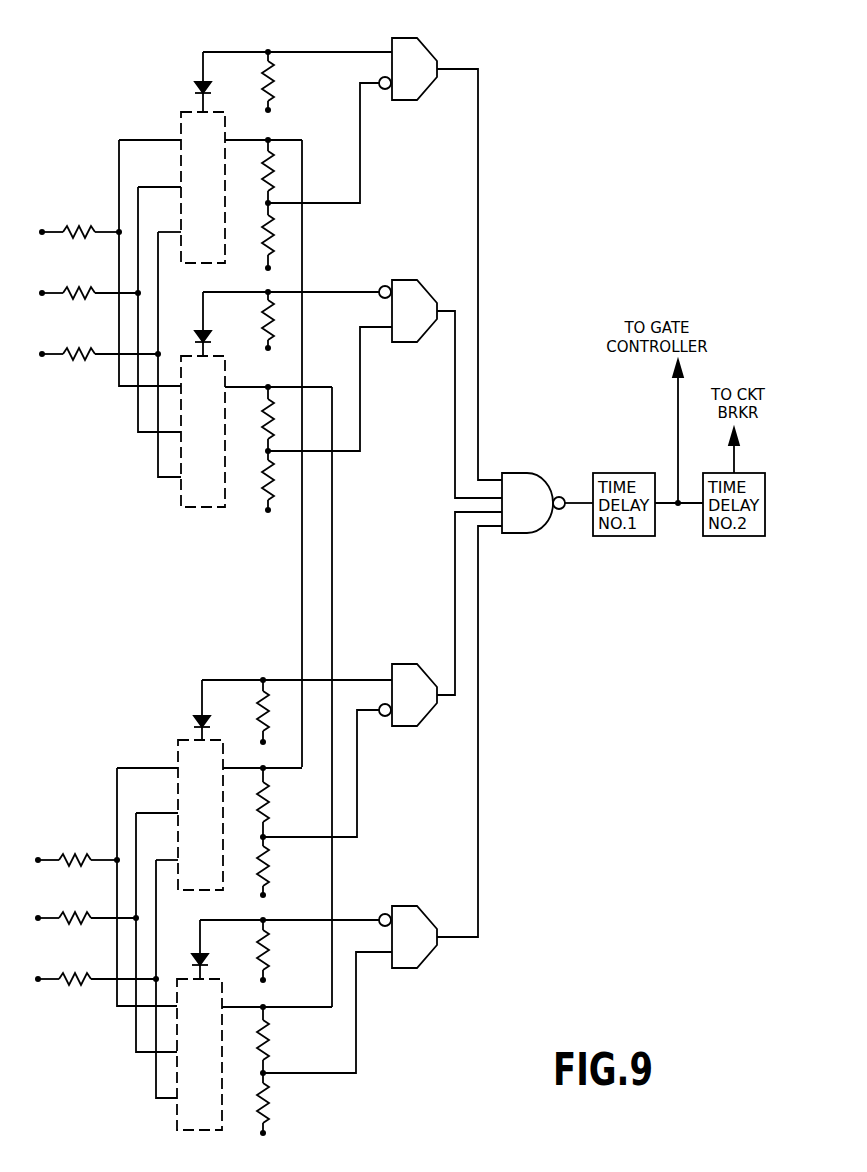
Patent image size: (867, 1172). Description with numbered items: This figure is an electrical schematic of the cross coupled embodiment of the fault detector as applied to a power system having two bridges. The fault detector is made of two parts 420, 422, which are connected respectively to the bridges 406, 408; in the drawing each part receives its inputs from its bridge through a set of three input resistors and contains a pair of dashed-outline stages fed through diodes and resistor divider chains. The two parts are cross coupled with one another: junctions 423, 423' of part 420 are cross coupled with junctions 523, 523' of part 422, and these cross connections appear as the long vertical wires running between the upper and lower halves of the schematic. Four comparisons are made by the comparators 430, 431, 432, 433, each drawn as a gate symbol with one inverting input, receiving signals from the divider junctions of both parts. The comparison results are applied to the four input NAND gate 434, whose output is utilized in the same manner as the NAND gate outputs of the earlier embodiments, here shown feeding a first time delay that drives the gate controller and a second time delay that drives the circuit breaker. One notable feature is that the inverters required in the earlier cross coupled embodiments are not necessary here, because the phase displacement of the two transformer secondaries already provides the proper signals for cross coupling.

The first part of fault detector 420 is at (147, 109).
The second part of fault detector 422 is at (130, 738).
The junction 423 is at (255, 170).
The junction 423' is at (286, 411).
The junction 523 is at (254, 787).
The junction 523' is at (284, 1026).
The comparator 430 is at (437, 46).
The comparator 431 is at (442, 268).
The comparator 432 is at (429, 650).
The comparator 433 is at (438, 891).
The four input NAND gate 434 is at (540, 470).
The bridge 406 is at (43, 369).
The bridge 408 is at (39, 994).